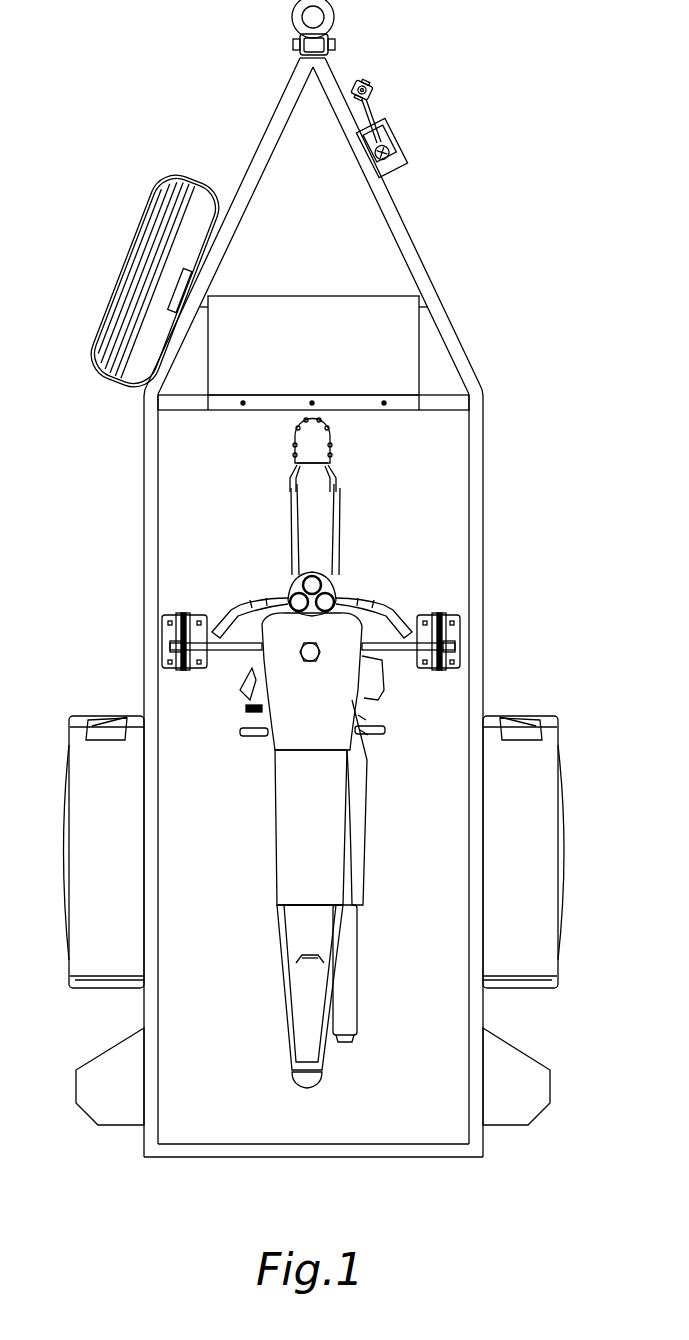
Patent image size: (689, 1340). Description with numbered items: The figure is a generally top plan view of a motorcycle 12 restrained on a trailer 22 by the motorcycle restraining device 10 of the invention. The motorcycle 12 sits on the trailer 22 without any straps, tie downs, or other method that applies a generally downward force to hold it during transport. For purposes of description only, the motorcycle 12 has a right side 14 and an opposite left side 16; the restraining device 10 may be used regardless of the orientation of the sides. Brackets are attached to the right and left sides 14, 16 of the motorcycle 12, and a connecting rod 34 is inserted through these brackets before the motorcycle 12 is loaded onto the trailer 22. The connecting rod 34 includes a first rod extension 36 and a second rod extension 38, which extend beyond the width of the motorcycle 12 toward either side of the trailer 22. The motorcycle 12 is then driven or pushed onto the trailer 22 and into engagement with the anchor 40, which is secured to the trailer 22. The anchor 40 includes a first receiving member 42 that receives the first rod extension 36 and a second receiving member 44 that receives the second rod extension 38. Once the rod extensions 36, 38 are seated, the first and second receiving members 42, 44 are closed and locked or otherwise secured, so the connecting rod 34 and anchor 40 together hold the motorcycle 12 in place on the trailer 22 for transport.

The motorcycle restraining device 10 is at (452, 612).
The motorcycle 12 is at (316, 753).
The right side 14 is at (365, 778).
The left side 16 is at (277, 800).
The trailer 22 is at (470, 352).
The connecting rod 34 is at (238, 652).
The first rod extension 36 is at (456, 648).
The second rod extension 38 is at (170, 648).
The anchor 40 is at (190, 612).
The first receiving member 42 is at (440, 630).
The second receiving member 44 is at (183, 615).